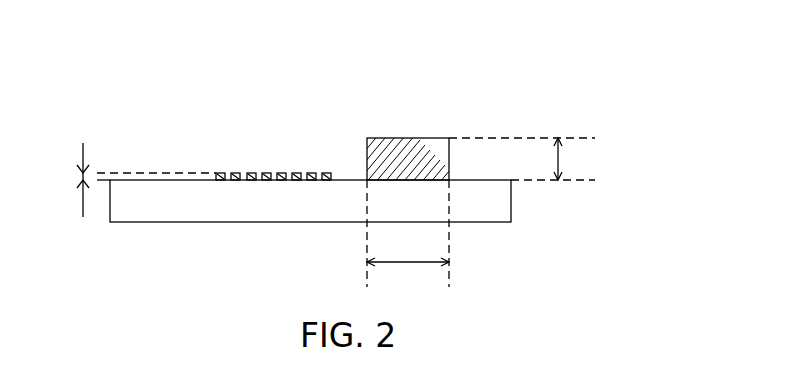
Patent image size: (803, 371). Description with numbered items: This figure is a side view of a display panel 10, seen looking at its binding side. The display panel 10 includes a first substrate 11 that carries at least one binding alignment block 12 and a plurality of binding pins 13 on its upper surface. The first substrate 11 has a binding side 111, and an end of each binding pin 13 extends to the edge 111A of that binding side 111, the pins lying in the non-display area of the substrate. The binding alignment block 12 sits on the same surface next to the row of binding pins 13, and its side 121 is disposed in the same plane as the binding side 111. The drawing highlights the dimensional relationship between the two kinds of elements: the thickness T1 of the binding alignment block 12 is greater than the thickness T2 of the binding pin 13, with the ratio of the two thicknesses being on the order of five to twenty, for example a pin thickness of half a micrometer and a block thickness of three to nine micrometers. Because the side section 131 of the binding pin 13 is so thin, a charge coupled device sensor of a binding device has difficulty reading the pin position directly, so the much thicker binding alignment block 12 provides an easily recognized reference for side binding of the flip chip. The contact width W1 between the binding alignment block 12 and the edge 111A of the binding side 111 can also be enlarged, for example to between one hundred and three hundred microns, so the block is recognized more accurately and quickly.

The display panel 10 is at (104, 62).
The first substrate 11 is at (372, 234).
The binding side 111 is at (473, 206).
The edge of the binding side 111A is at (352, 180).
The binding alignment block 12 is at (427, 170).
The side of the binding alignment block 121 is at (407, 155).
The binding pins 13 is at (274, 124).
The side section of the binding pin 131 is at (251, 172).
The thickness of the binding alignment block T1 is at (522, 159).
The thickness of the binding pin T2 is at (79, 180).
The contact width W1 is at (408, 234).